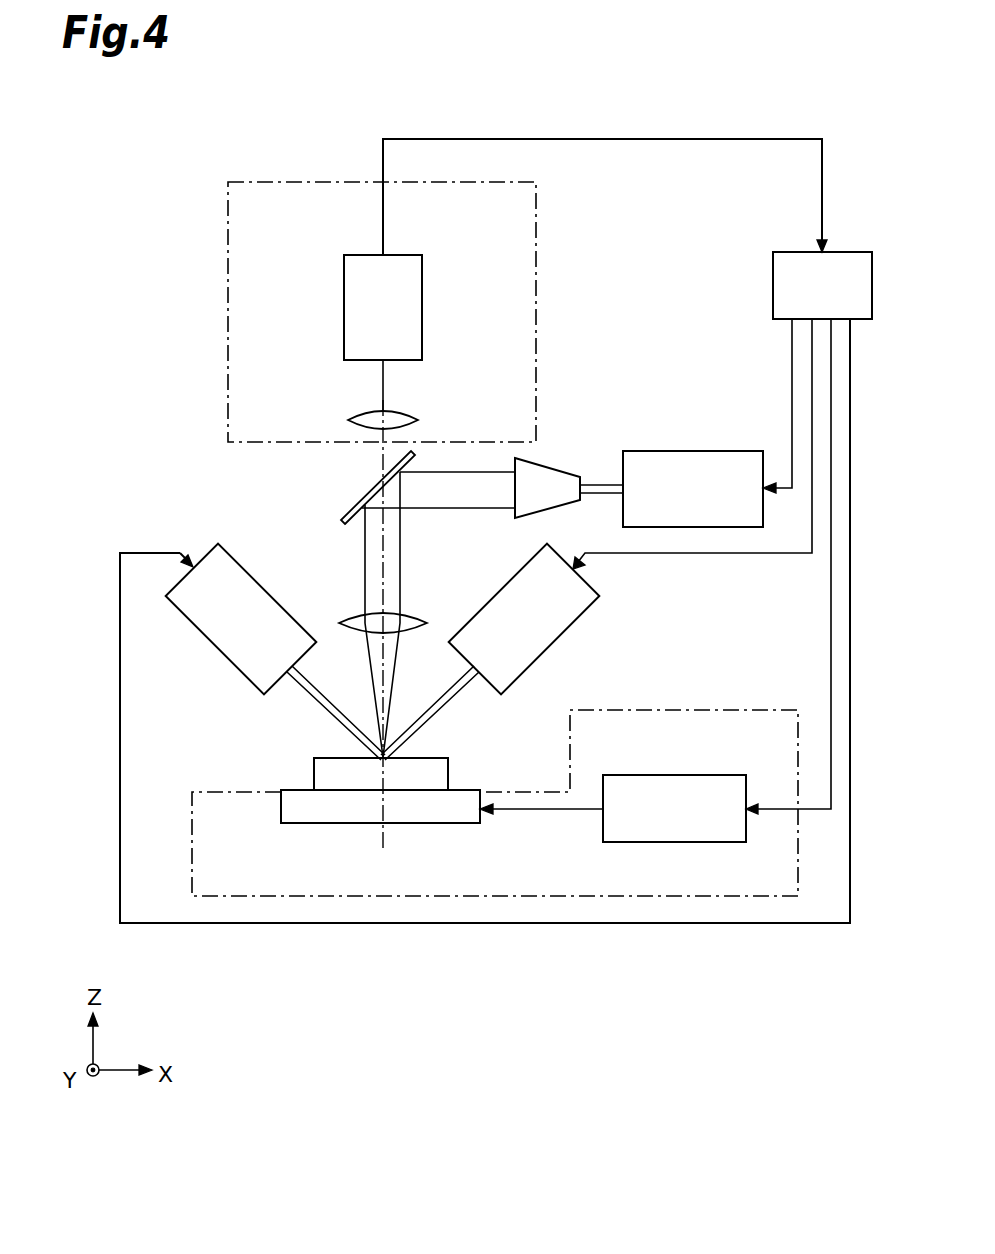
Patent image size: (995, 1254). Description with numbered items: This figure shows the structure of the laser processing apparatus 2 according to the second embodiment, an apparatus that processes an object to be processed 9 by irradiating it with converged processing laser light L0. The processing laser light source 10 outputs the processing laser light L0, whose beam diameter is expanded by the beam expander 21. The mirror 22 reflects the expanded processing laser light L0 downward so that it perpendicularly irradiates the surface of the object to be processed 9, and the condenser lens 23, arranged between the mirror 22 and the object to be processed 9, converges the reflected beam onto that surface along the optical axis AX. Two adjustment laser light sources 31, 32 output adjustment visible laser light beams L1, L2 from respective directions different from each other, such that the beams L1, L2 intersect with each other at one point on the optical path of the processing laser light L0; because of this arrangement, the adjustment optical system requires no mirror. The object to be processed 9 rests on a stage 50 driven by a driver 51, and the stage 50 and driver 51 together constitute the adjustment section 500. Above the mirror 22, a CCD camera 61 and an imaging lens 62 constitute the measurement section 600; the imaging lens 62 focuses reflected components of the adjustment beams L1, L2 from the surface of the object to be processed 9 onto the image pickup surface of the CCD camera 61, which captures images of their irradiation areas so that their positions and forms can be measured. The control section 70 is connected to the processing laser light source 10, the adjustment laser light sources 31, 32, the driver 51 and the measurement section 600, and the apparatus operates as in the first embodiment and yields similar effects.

The laser processing apparatus 2 is at (86, 198).
The object to be processed 9 is at (314, 774).
The processing laser light source 10 is at (695, 451).
The beam expander 21 is at (556, 458).
The mirror 22 is at (356, 503).
The condenser lens 23 is at (352, 618).
The adjustment laser light source 31 is at (556, 641).
The adjustment laser light source 32 is at (236, 560).
The stage 50 is at (281, 806).
The driver 51 is at (723, 775).
The CCD camera 61 is at (344, 312).
The imaging lens 62 is at (366, 419).
The control section 70 is at (843, 250).
The adjustment section 500 is at (768, 710).
The measurement section 600 is at (536, 353).
The processing laser light L0 is at (396, 669).
The adjustment visible laser light beam L1 is at (445, 712).
The adjustment visible laser light beam L2 is at (323, 714).
The optical axis AX is at (378, 636).